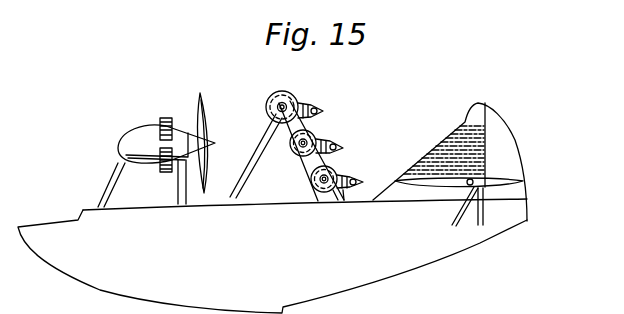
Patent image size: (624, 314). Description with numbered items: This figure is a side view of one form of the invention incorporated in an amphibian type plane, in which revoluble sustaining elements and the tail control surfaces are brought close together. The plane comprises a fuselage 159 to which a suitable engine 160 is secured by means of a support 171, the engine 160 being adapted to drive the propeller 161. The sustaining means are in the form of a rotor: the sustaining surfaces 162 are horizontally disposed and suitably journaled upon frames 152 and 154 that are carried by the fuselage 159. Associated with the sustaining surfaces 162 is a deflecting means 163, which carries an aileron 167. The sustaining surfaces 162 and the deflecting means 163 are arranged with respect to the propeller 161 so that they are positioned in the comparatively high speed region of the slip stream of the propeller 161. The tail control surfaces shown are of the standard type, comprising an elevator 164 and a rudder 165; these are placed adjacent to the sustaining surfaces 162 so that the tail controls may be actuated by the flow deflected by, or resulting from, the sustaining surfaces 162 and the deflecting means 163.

The fuselage 159 is at (424, 268).
The engine 160 is at (135, 135).
The propeller 161 is at (205, 103).
The support 171 is at (177, 187).
The sustaining surfaces 162 is at (297, 92).
The deflecting means 163 is at (318, 104).
The aileron 167 is at (340, 147).
The frame 154 is at (334, 163).
The frame 152 is at (244, 190).
The rudder 165 is at (510, 135).
The elevator 164 is at (500, 177).